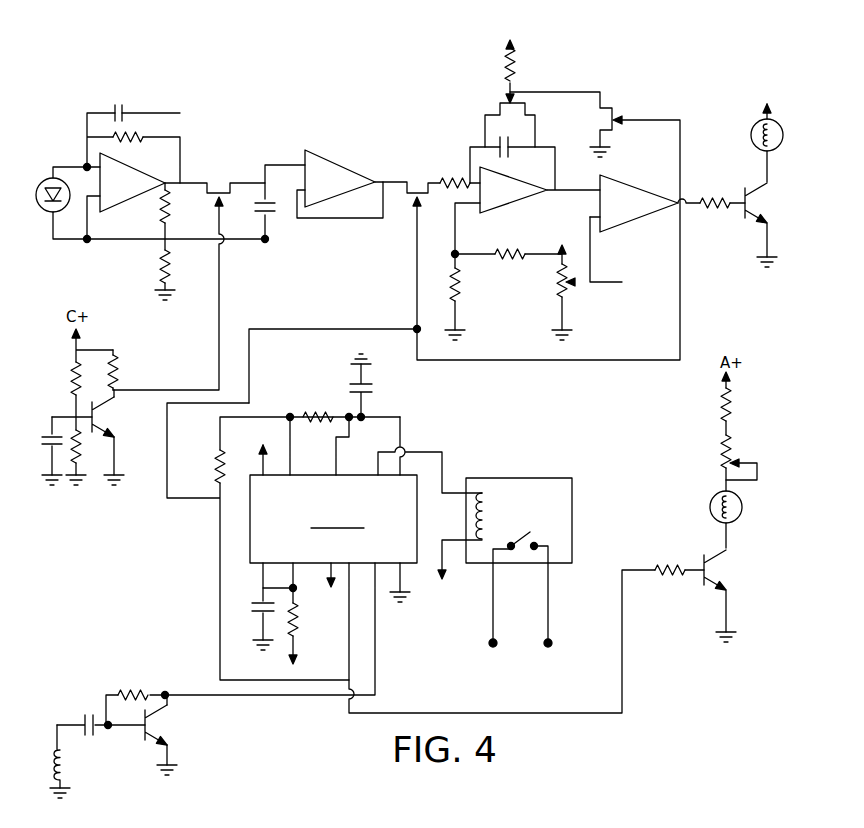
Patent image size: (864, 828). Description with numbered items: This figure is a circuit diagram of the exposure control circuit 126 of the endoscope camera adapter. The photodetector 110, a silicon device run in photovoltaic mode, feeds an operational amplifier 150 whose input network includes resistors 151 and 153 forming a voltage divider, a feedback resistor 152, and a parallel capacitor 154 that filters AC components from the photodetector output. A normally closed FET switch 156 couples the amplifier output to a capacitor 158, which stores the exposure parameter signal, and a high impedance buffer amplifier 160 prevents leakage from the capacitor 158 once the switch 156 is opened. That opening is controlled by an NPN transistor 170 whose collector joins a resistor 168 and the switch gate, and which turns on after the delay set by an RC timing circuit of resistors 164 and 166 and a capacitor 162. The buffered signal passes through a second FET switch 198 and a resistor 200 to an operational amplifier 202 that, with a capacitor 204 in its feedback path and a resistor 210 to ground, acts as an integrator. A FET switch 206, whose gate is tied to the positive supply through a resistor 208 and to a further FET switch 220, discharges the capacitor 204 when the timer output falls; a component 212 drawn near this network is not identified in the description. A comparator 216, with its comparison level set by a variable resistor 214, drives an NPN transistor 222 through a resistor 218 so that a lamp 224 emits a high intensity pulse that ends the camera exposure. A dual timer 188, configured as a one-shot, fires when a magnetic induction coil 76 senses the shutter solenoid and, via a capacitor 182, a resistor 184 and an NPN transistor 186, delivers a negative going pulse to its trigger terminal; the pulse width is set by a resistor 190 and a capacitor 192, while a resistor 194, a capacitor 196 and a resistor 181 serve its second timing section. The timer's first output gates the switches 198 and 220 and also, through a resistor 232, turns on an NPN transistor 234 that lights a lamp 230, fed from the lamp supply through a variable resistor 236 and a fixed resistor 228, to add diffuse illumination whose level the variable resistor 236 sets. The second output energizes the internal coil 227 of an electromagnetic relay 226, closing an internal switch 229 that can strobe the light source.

The photodetector 110 is at (40, 190).
The circuit 126 is at (319, 98).
The operational amplifier 150 is at (130, 166).
The resistor 151 is at (168, 210).
The feedback resistor 152 is at (126, 131).
The resistor 153 is at (168, 262).
The capacitor 154 is at (112, 104).
The FET switch 156 is at (229, 182).
The capacitor 158 is at (268, 199).
The high impedance buffer amplifier 160 is at (353, 166).
The capacitor 162 is at (50, 433).
The resistor 164 is at (82, 450).
The resistor 166 is at (73, 368).
The resistor 168 is at (117, 362).
The NPN transistor 170 is at (105, 407).
The resistor 181 is at (217, 470).
The capacitor 182 is at (82, 720).
The resistor 184 is at (134, 692).
The NPN transistor 186 is at (158, 740).
The dual timer 188 is at (249, 538).
The resistor 190 is at (300, 622).
The capacitor 192 is at (244, 600).
The resistor 194 is at (316, 416).
The capacitor 196 is at (372, 388).
The FET switch 198 is at (410, 182).
The resistor 200 is at (458, 169).
The operational amplifier 202 is at (508, 200).
The capacitor 204 is at (510, 152).
The FET switch 206 is at (527, 119).
The resistor 208 is at (506, 76).
The resistor 210 is at (460, 282).
The resistor 212 is at (510, 260).
The variable resistor 214 is at (557, 285).
The comparator 216 is at (632, 212).
The resistor 218 is at (712, 202).
The FET switch 220 is at (612, 108).
The NPN transistor 222 is at (762, 192).
The lamp 224 is at (783, 130).
The electromagnetic relay 226 is at (500, 531).
The internal coil 227 is at (487, 512).
The fixed resistor 228 is at (731, 406).
The internal switch 229 is at (526, 534).
The lamp 230 is at (742, 512).
The resistor 232 is at (662, 565).
The NPN transistor 234 is at (720, 572).
The variable resistor 236 is at (733, 455).
The magnetic induction coil 76 is at (65, 762).